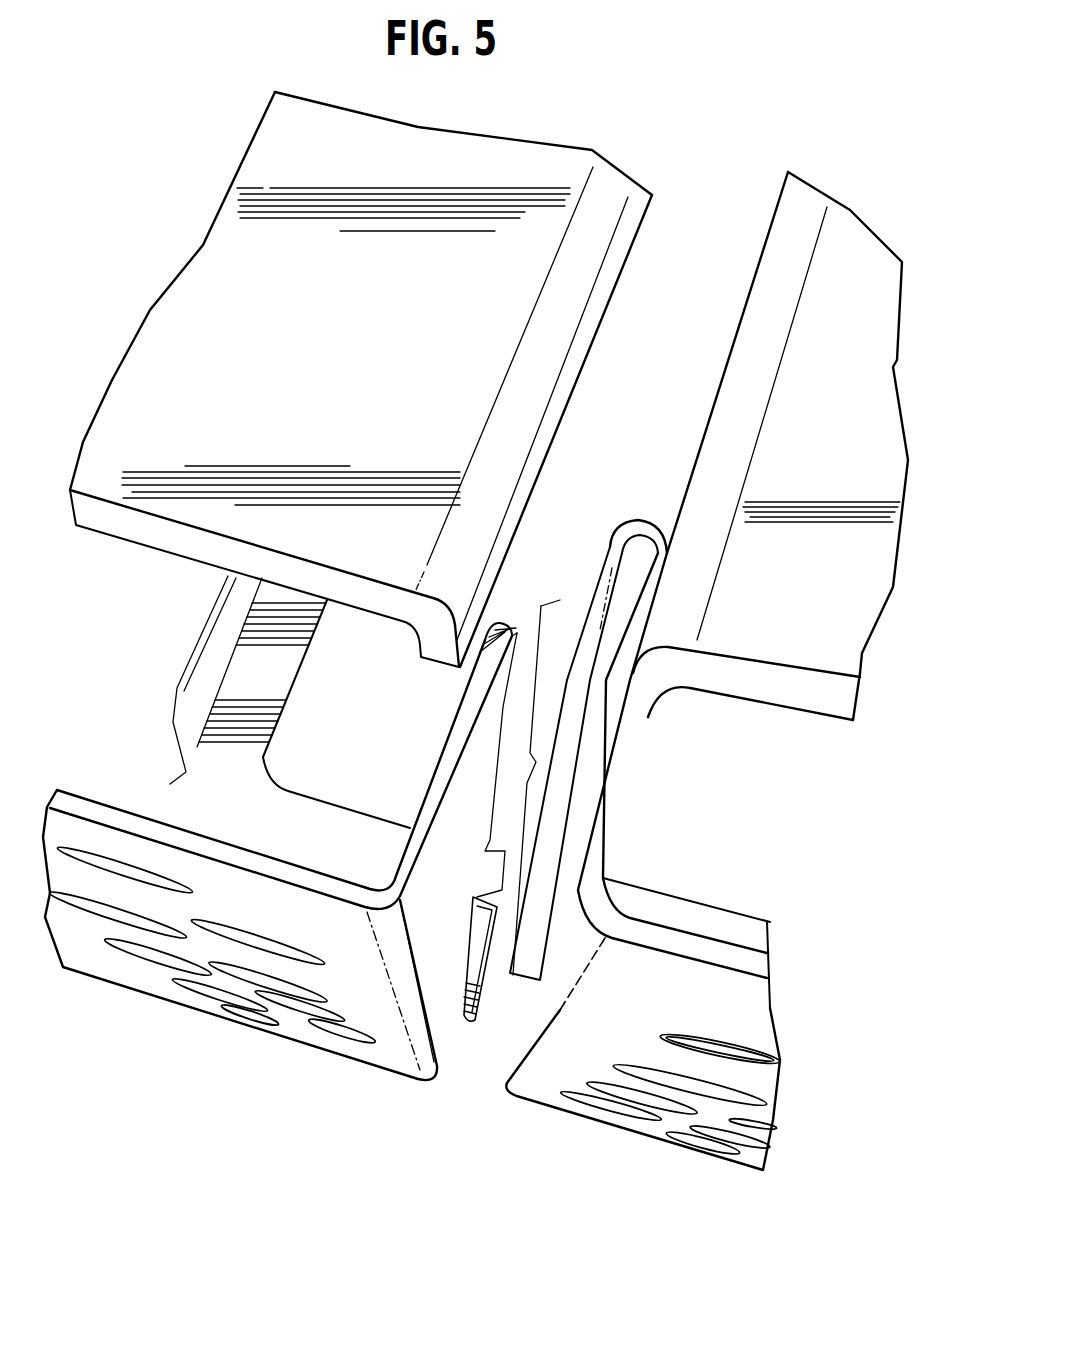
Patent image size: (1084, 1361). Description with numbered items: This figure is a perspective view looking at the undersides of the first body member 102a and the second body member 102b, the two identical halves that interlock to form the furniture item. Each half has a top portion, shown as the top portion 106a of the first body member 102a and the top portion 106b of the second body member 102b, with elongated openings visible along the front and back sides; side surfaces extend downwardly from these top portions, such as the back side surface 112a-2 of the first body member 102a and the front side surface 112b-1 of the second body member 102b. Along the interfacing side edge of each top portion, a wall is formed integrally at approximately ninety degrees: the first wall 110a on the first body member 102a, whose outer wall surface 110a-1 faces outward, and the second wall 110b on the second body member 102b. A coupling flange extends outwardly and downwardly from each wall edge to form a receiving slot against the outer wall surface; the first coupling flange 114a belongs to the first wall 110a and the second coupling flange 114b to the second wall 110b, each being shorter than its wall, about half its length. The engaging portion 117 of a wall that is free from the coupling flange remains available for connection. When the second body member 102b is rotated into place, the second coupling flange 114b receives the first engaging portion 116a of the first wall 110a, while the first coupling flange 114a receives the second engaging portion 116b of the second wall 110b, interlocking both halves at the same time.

The first body member 102a is at (145, 242).
The second body member 102b is at (920, 372).
The back side surface of first body member 112a-2 is at (318, 329).
The front side surface of second body member 112b-1 is at (842, 263).
The top portion of first body member 106a is at (115, 893).
The top portion of second body member 106b is at (700, 1015).
The first wall 110a is at (435, 958).
The outer wall surface of first wall 110a-1 is at (524, 636).
The second wall 110b is at (627, 802).
The first coupling flange 114a is at (480, 983).
The second coupling flange 114b is at (598, 573).
The first engaging portion 116a is at (500, 900).
The second engaging portion 116b is at (630, 608).
The engaging portion 117 is at (577, 812).